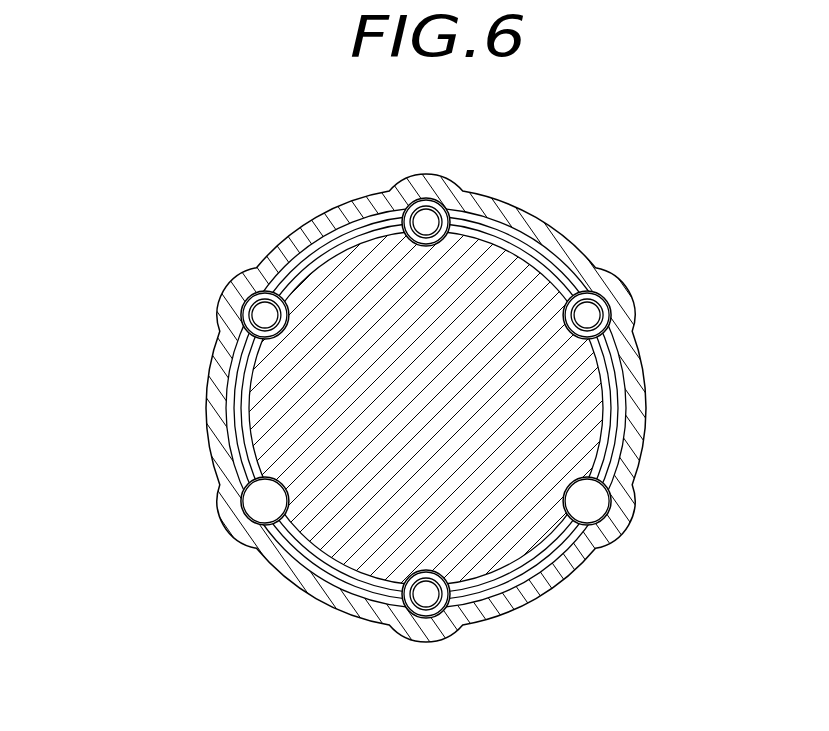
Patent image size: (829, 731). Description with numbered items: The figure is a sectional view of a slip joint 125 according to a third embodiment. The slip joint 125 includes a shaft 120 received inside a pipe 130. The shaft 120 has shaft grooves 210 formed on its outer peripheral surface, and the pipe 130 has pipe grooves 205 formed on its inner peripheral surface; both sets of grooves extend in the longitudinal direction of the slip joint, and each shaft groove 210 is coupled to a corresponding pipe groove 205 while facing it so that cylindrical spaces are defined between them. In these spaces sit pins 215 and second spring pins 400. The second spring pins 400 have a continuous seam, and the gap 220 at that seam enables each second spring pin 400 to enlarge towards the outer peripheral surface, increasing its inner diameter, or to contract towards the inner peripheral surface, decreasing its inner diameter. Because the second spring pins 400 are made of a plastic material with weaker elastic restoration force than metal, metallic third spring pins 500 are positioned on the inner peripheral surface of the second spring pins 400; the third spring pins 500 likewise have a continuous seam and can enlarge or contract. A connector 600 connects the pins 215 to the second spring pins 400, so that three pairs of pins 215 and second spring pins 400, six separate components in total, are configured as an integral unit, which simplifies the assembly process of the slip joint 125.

The slip joint 125 is at (582, 198).
The pipe 130 is at (322, 228).
The shaft 120 is at (277, 380).
The shaft grooves 210 is at (230, 453).
The gap 220 is at (350, 567).
The connector 600 is at (612, 398).
The pins 215 is at (257, 510).
The pipe grooves 205 is at (345, 578).
The second spring pins 400 is at (613, 300).
The third spring pins 500 is at (611, 327).